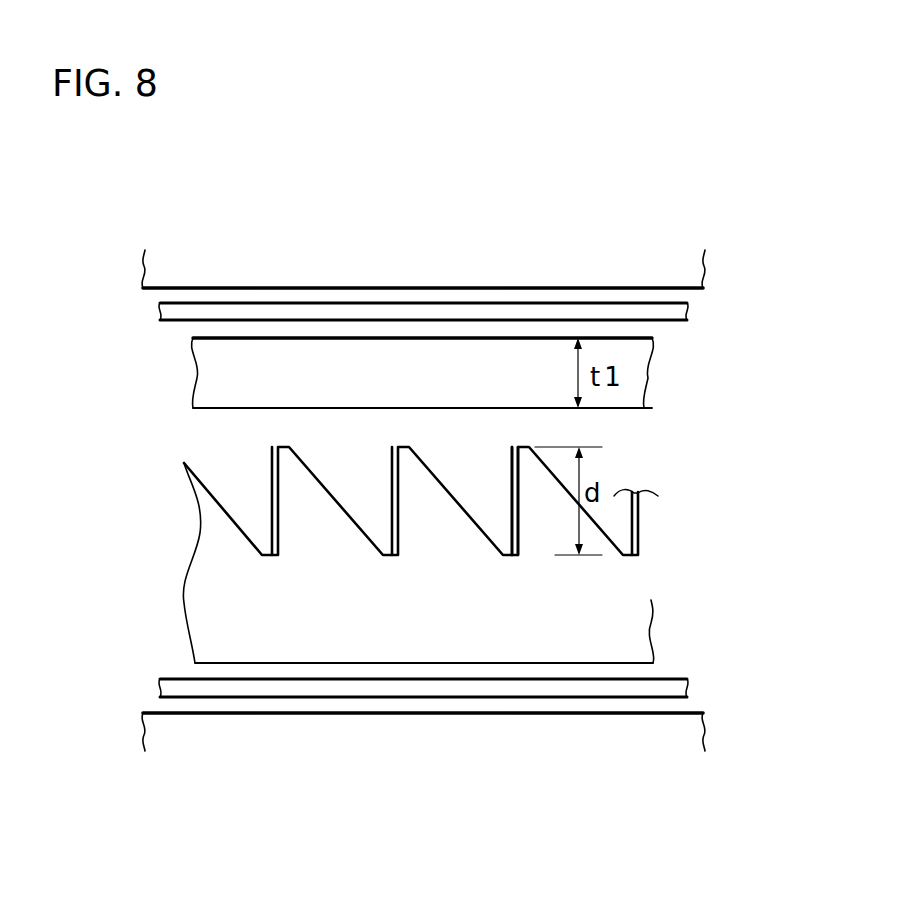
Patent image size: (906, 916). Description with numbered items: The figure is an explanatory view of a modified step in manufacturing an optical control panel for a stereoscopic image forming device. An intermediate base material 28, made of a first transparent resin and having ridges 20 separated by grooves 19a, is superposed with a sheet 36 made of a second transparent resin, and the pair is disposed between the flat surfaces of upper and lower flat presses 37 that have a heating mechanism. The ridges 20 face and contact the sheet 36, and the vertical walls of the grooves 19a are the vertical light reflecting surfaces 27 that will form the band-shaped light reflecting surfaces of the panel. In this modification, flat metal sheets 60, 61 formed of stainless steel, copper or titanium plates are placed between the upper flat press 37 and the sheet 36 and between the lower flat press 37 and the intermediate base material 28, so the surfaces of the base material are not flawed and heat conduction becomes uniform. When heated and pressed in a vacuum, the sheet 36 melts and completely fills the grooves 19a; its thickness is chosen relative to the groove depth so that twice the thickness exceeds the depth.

The grooves 19a is at (472, 463).
The ridges 20 is at (297, 483).
The vertical light reflecting surfaces 27 is at (512, 480).
The intermediate base material 28 is at (290, 663).
The sheet 36 is at (292, 352).
The flat presses 37 is at (688, 278).
The flat metal sheet 60 is at (173, 312).
The flat metal sheet 61 is at (177, 682).